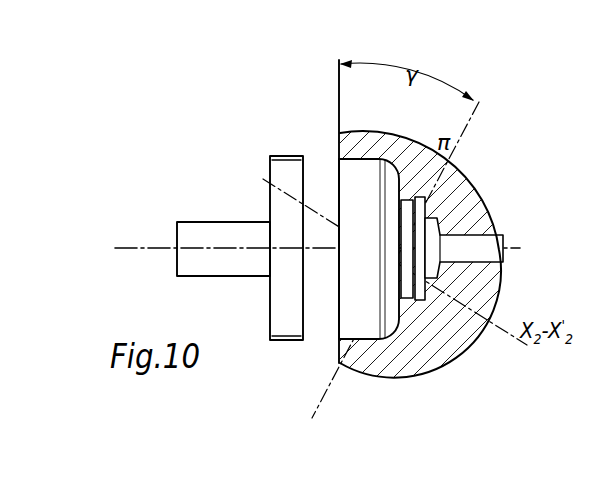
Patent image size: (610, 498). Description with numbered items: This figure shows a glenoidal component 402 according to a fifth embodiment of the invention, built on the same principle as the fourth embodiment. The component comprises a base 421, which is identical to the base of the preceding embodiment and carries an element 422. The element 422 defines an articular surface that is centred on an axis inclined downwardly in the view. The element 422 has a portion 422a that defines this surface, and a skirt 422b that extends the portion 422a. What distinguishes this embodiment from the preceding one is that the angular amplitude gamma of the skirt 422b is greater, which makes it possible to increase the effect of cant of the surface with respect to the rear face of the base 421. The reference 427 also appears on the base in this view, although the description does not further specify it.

The glenoidal component 402 is at (315, 31).
The base 421 is at (205, 212).
The flange plate 427 is at (212, 277).
The element 422 is at (453, 249).
The portion 422a is at (473, 174).
The skirt 422b is at (390, 100).